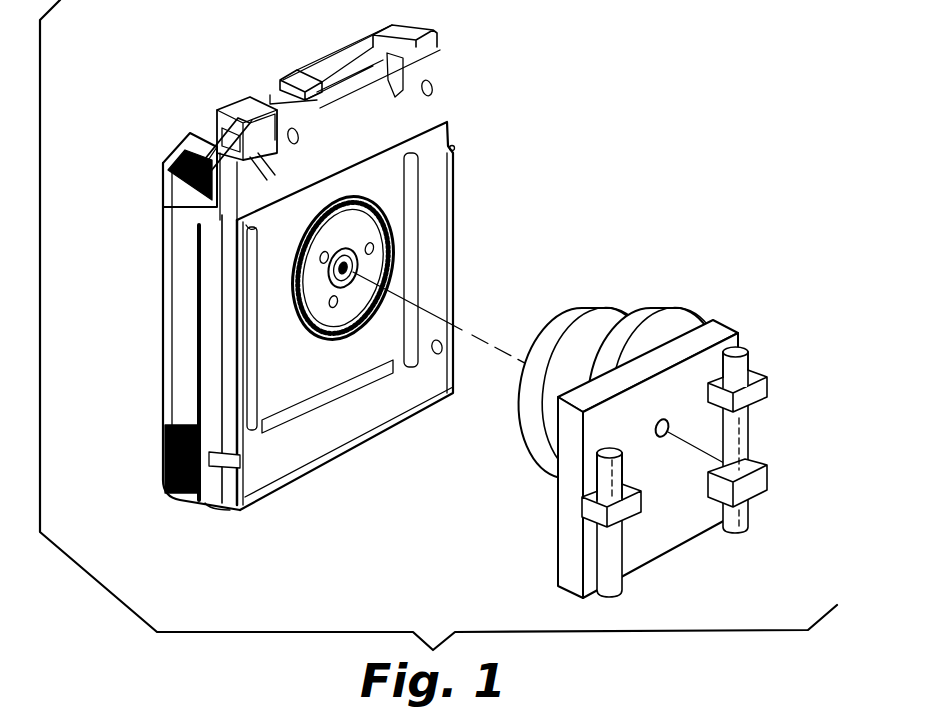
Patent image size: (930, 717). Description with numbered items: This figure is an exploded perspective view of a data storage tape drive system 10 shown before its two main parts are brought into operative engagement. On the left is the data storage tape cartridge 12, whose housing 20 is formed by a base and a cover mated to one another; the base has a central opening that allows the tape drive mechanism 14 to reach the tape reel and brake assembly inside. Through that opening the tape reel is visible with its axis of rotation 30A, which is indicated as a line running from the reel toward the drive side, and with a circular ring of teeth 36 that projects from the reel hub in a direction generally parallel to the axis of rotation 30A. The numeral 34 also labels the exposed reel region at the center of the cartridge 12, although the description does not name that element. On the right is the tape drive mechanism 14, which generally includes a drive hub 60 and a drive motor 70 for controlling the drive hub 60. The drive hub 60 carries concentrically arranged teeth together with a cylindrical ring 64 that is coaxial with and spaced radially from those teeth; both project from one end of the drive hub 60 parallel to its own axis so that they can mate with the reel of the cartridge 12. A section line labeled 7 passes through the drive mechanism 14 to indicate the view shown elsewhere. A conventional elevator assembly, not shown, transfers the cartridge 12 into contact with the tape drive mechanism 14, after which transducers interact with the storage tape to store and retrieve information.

The data storage tape drive system 10 is at (624, 116).
The data storage tape cartridge 12 is at (300, 47).
The tape drive mechanism 14 is at (519, 505).
The housing 20 is at (182, 397).
The axis of rotation 30A is at (424, 333).
The cartridge hub 34 is at (370, 264).
The circular ring of teeth 36 is at (326, 340).
The drive hub 60 is at (598, 303).
The cylindrical ring 64 is at (516, 426).
The drive motor 70 is at (671, 303).
The section line 7- 7 is at (87, 163).